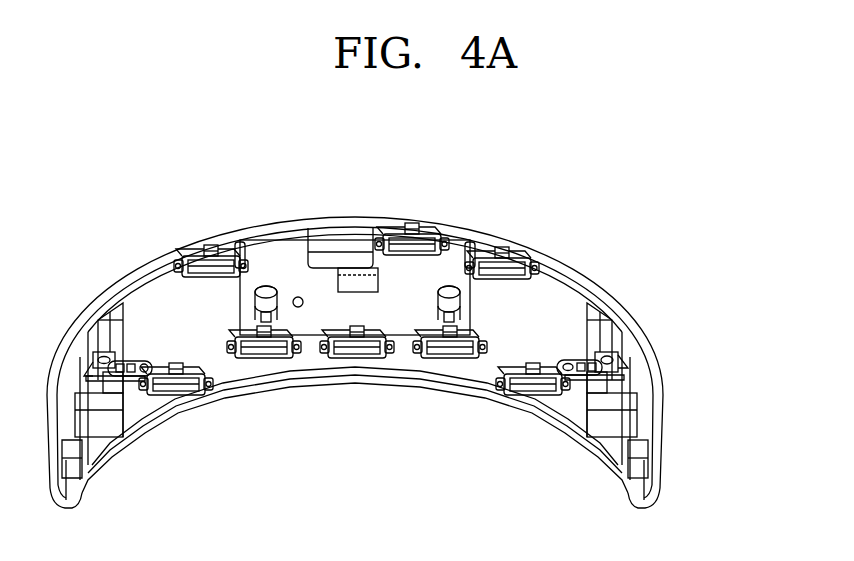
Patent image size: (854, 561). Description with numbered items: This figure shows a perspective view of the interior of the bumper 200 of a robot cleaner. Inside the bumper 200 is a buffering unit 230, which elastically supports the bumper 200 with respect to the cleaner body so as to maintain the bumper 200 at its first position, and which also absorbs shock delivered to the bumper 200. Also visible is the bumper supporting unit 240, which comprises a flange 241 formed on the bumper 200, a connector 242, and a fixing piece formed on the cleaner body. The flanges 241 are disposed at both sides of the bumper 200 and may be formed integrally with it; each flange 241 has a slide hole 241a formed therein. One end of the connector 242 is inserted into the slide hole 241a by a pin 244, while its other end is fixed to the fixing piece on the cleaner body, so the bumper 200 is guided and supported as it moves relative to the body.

The bumper 200 is at (313, 218).
The buffering unit 230 is at (446, 318).
The bumper supporting unit 240 is at (669, 380).
The flange 241 is at (614, 357).
The slide hole 241a is at (607, 348).
The connector 242 is at (625, 407).
The pin 244 is at (609, 355).